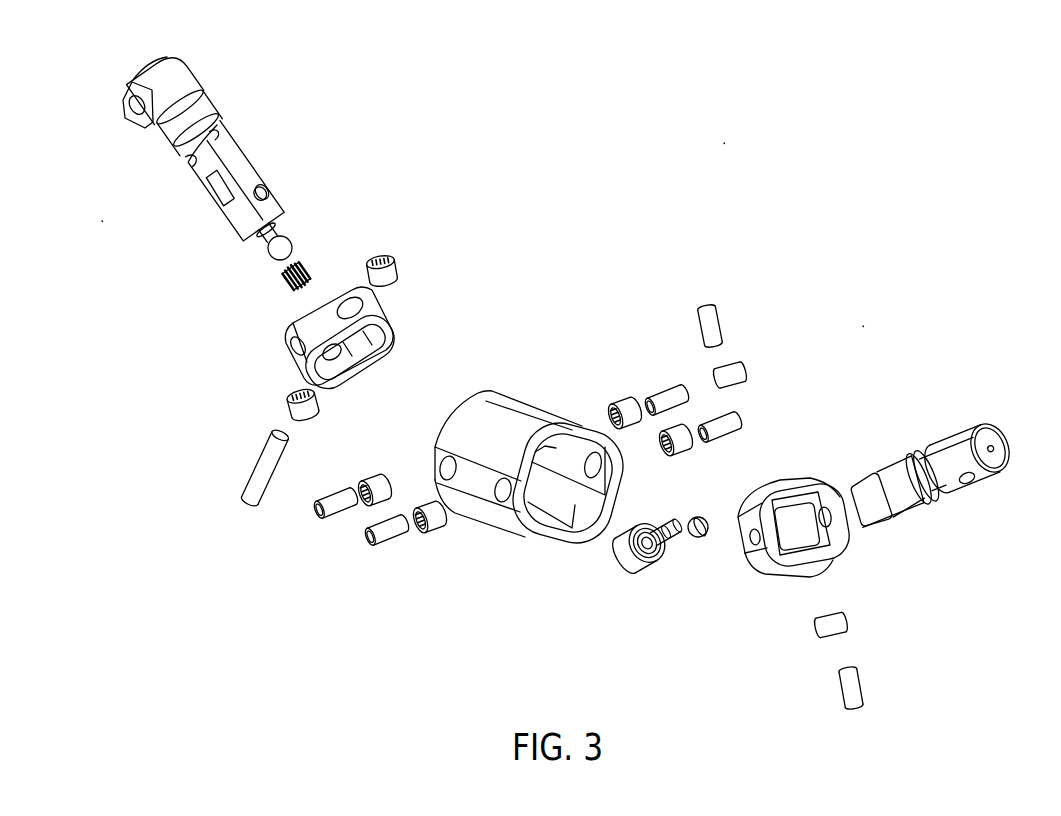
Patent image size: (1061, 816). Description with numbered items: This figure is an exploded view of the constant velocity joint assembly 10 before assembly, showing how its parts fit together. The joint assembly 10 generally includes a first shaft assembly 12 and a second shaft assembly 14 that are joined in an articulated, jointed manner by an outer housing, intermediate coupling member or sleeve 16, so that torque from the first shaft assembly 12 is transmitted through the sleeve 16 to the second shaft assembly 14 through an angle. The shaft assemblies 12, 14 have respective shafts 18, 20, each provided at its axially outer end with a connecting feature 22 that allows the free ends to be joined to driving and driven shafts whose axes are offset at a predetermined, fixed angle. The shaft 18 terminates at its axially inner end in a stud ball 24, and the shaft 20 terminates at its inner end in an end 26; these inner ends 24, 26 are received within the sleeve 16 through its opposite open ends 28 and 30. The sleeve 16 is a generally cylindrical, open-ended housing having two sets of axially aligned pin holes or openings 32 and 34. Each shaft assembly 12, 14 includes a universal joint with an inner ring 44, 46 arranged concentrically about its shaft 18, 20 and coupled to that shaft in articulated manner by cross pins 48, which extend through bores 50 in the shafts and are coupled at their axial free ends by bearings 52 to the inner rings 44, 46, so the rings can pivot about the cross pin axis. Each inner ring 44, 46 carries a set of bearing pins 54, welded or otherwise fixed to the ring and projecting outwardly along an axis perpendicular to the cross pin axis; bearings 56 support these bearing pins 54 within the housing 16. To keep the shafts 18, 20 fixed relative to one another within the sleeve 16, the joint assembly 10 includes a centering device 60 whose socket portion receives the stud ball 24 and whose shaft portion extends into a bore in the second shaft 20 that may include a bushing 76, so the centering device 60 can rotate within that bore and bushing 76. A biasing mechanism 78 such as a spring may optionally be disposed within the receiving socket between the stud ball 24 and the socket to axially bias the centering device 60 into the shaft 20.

The constant velocity joint assembly 10 is at (728, 140).
The first shaft assembly 12 is at (100, 222).
The second shaft assembly 14 is at (866, 324).
The sleeve 16 is at (542, 418).
The first shaft 18 is at (212, 118).
The second shaft 20 is at (951, 433).
The connecting features 22 is at (128, 86).
The stud ball 24 is at (298, 228).
The end 26 is at (855, 450).
The open end 28 is at (458, 400).
The open end 30 is at (563, 510).
The pin holes 32 is at (442, 470).
The pin holes 34 is at (505, 500).
The inner ring 44 is at (290, 328).
The inner ring 46 is at (770, 578).
The cross pins 48 is at (255, 463).
The bores 50 is at (262, 188).
The bearings 52 is at (378, 252).
The bearing pins 54 is at (338, 516).
The bearings 56 is at (357, 484).
The centering device 60 is at (643, 572).
The bushing 76 is at (701, 537).
The biasing mechanism 78 is at (305, 267).